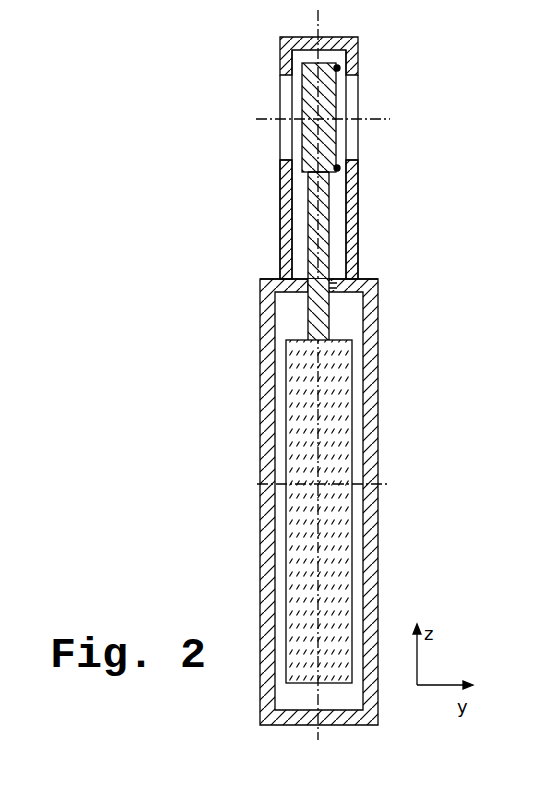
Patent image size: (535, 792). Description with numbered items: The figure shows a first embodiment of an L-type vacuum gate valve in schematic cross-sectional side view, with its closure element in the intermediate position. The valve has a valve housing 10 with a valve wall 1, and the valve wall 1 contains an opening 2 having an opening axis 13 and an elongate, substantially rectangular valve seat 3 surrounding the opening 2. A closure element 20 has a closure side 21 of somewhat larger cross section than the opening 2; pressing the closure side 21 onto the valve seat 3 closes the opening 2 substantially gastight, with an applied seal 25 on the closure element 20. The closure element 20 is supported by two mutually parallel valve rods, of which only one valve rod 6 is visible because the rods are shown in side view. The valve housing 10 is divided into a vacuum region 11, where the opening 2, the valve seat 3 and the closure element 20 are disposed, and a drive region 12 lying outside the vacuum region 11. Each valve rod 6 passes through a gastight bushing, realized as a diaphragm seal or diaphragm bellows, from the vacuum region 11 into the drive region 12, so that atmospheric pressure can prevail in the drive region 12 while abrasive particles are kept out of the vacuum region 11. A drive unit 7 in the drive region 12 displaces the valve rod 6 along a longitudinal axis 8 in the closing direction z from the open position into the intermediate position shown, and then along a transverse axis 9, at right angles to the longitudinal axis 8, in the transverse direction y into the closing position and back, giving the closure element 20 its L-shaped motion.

The valve wall 1 is at (352, 228).
The opening 2 is at (353, 106).
The valve seat 3 is at (349, 163).
The valve rod 6 is at (323, 314).
The drive unit 7 is at (345, 420).
The longitudinal axis 8 is at (320, 26).
The transverse axis 9 is at (257, 484).
The valve housing 10 is at (268, 290).
The vacuum region 11 is at (306, 193).
The drive region 12 is at (288, 315).
The opening axis 13 is at (258, 119).
The closure element 20 is at (304, 136).
The closure side 21 is at (333, 128).
The seal 25 is at (345, 66).